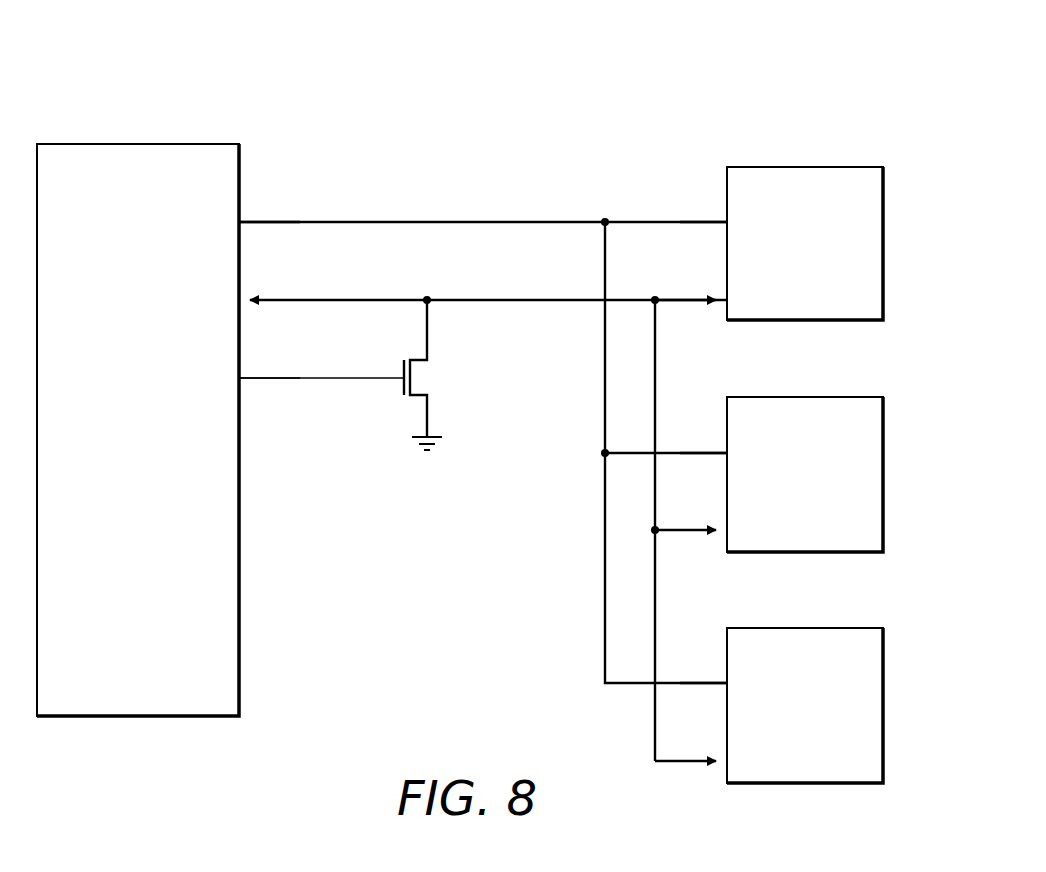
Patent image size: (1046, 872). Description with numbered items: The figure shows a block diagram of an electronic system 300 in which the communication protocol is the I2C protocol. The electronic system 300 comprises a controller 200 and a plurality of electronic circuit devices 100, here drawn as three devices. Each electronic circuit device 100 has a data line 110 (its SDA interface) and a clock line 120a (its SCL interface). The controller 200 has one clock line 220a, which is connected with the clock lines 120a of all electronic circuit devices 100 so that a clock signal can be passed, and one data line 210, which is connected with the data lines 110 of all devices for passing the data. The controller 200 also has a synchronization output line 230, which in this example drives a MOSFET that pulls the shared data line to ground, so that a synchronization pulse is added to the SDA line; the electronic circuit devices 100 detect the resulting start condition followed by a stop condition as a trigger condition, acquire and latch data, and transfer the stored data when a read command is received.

The electronic system 300 is at (646, 72).
The controller 200 is at (208, 144).
The clock line 220a is at (202, 222).
The data line 210 is at (196, 300).
The synchronization output line 230 is at (186, 378).
The electronic circuit device 100 is at (853, 167).
The clock line 120a is at (766, 222).
The data line 110 is at (772, 300).